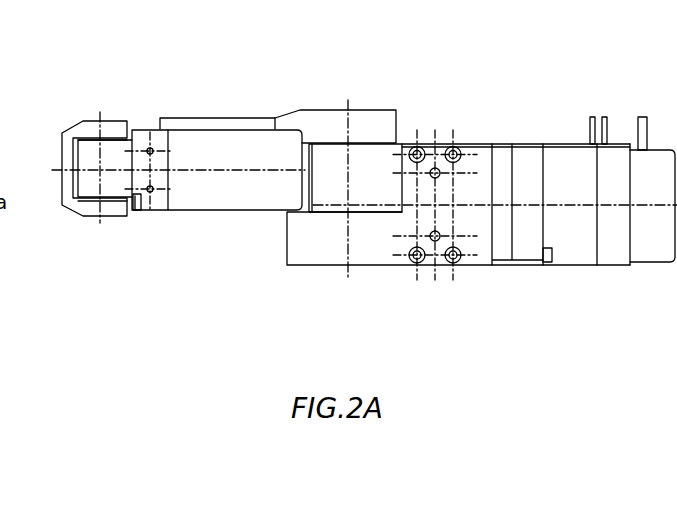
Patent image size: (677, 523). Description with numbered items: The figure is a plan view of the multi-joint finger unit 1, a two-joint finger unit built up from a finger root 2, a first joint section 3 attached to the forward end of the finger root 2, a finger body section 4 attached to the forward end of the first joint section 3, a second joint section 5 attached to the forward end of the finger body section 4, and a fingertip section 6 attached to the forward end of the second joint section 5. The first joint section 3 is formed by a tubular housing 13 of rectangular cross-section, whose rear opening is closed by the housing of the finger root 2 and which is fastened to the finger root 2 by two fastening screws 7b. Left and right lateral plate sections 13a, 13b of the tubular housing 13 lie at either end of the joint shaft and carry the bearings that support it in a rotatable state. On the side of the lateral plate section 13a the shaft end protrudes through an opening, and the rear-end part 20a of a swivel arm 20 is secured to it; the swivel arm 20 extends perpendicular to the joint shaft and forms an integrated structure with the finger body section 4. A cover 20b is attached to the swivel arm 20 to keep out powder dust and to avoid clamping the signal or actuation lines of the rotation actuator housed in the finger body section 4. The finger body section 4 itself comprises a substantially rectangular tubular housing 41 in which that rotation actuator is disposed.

The multi-joint finger unit 1 is at (263, 273).
The finger root 2 is at (572, 268).
The first joint section 3 is at (345, 270).
The finger body section 4 is at (240, 187).
The second joint section 5 is at (152, 210).
The fingertip section 6 is at (60, 212).
The fastening screws 7b is at (547, 267).
The tubular housing 13 is at (387, 255).
The lateral plate section 13a is at (440, 143).
The lateral plate section 13b is at (435, 267).
The swivel arm 20 is at (242, 116).
The rear-end part 20a is at (335, 117).
The cover 20b is at (190, 118).
The tubular housing 41 is at (200, 197).